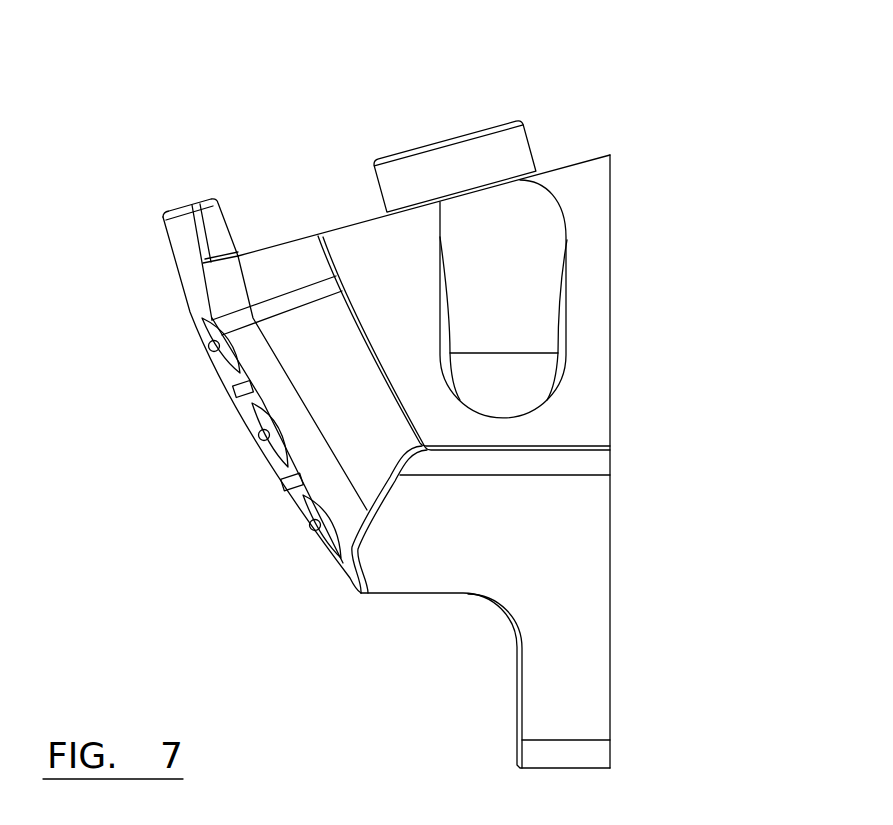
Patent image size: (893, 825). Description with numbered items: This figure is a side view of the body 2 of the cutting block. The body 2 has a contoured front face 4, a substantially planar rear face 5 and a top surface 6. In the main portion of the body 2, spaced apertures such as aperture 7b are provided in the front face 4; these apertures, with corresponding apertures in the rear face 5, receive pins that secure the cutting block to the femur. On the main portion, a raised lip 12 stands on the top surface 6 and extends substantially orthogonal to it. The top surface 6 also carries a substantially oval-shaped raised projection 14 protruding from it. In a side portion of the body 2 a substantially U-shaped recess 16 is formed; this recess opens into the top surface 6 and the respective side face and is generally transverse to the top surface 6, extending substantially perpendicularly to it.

The body 2 is at (631, 192).
The contoured front face 4 is at (240, 413).
The rear face 5 is at (612, 537).
The top surface 6 is at (280, 243).
The aperture 7b is at (223, 354).
The raised lip 12 is at (182, 239).
The raised projection 14 is at (487, 147).
The U-shaped recess 16 is at (522, 320).